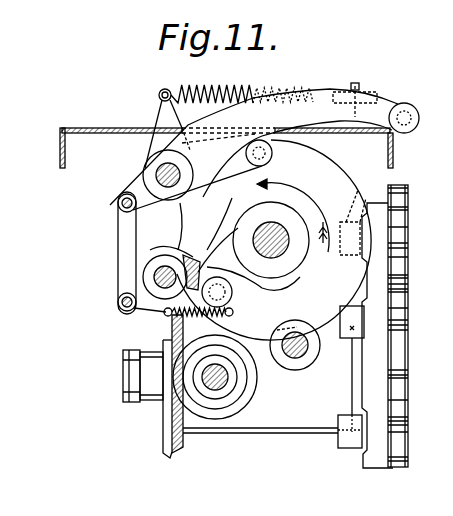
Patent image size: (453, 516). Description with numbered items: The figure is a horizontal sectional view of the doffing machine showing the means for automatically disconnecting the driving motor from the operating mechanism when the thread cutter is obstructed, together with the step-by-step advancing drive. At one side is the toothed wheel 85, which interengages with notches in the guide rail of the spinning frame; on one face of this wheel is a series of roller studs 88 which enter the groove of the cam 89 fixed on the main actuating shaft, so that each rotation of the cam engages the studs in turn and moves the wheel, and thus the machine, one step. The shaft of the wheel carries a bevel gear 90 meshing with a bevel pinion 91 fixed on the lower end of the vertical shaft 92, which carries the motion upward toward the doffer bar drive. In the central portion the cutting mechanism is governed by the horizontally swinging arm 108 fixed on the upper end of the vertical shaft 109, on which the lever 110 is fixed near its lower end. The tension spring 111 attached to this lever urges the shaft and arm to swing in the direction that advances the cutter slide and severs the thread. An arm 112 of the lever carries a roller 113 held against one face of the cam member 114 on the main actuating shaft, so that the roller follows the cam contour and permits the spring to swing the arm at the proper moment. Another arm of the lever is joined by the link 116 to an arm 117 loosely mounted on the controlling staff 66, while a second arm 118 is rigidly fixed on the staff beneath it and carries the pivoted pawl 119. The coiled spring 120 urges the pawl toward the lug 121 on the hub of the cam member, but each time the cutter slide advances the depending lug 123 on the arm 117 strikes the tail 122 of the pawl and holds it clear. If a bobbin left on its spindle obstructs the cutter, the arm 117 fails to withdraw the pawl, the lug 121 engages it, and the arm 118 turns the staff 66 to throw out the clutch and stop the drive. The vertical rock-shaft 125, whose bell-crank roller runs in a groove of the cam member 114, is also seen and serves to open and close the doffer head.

The controlling staff 66 is at (146, 280).
The toothed wheel 85 is at (395, 310).
The roller studs 88 is at (352, 195).
The cam 89 is at (333, 180).
The bevel gear 90 is at (176, 450).
The bevel pinion 91 is at (231, 408).
The vertical shaft 92 is at (232, 378).
The horizontally swinging arm 108 is at (430, 79).
The vertical shaft 109 is at (147, 168).
The lever 110 is at (148, 166).
The tension spring 111 is at (322, 79).
The arm 112 is at (262, 201).
The roller 113 is at (276, 195).
The cam member 114 is at (350, 279).
The link 116 is at (120, 262).
The arm 117 is at (133, 312).
The arm 118 is at (121, 345).
The pawl 119 is at (312, 303).
The coiled spring 120 is at (286, 323).
The lug 121 is at (238, 210).
The tail 122 is at (195, 245).
The depending lug 123 is at (172, 228).
The vertical rock-shaft 125 is at (340, 392).